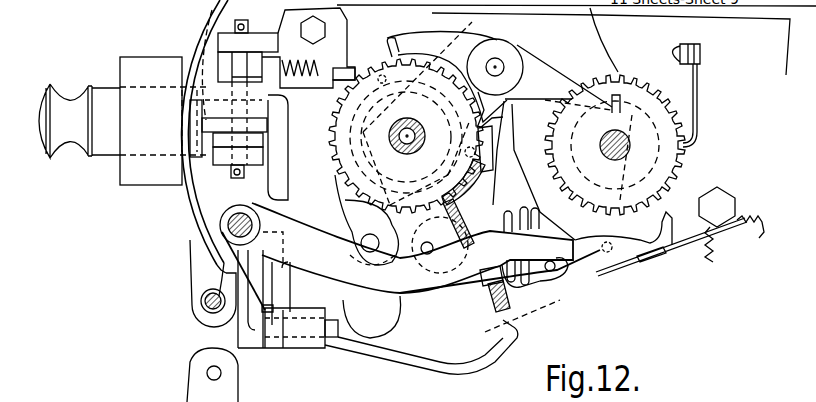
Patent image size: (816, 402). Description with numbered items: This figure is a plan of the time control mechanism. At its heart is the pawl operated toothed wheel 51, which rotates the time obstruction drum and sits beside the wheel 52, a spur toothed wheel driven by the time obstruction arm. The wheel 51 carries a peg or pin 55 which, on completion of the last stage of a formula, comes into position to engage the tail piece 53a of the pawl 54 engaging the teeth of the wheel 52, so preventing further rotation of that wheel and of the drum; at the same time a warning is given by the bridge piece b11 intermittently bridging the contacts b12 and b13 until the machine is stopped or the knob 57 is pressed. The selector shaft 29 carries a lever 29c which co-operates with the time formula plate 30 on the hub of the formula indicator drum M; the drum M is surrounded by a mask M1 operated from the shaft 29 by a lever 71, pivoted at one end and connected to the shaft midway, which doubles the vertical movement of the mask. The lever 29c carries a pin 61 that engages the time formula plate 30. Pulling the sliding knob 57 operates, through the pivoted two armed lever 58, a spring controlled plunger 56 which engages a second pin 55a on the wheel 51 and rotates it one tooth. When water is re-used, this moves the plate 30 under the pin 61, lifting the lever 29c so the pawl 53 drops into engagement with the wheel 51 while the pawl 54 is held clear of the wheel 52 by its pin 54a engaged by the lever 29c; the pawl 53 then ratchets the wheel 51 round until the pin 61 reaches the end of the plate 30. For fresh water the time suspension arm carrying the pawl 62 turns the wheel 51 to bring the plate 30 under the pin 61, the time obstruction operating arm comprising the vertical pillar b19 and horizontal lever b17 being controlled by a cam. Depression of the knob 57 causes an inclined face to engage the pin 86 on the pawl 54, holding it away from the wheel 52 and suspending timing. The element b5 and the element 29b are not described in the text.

The sliding knob 57 is at (66, 112).
The pivoted two armed lever 58 is at (220, 70).
The spring controlled plunger 56 is at (342, 68).
The lever 71 is at (285, 152).
The toothed wheel 51 is at (343, 105).
The peg or pin 55 is at (467, 147).
The second pin 55a is at (386, 56).
The time formula plate 30 is at (452, 188).
The tail piece 53a is at (496, 130).
The pawl 53 is at (534, 170).
The wheel 52 is at (668, 165).
The pin b5 is at (642, 97).
The formula indicator drum M is at (592, 30).
The pawl 54 is at (668, 215).
The lever 29c is at (557, 223).
The selector shaft 29 is at (230, 230).
The mask M1 is at (195, 223).
The pawl 62 is at (342, 215).
The lever arm 29b is at (425, 254).
The vertical pillar b19 is at (372, 314).
The pin 61 is at (508, 297).
The pin 54a is at (590, 273).
The pin 86 is at (607, 253).
The bridge piece b11 is at (652, 252).
The contact b12 is at (722, 242).
The contact b13 is at (758, 240).
The horizontal lever b17 is at (463, 360).